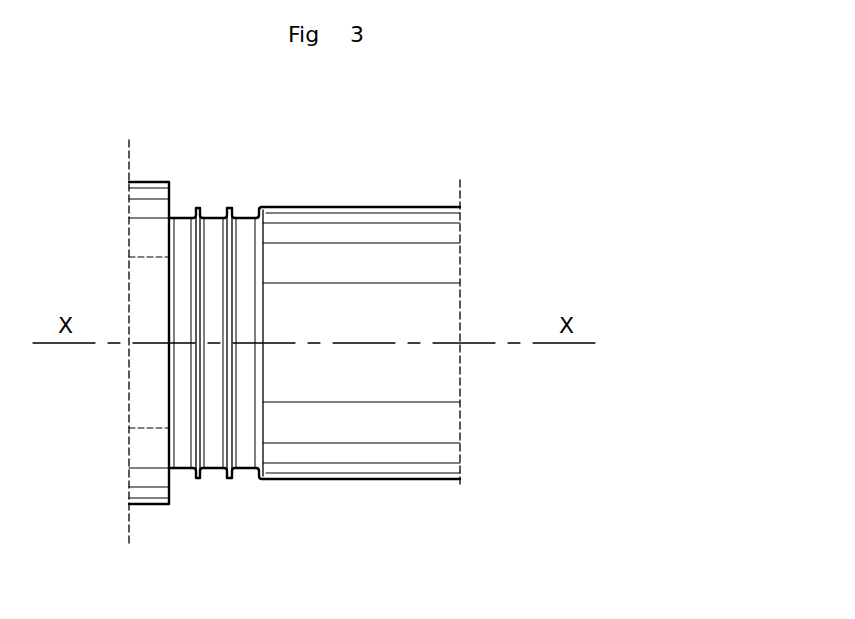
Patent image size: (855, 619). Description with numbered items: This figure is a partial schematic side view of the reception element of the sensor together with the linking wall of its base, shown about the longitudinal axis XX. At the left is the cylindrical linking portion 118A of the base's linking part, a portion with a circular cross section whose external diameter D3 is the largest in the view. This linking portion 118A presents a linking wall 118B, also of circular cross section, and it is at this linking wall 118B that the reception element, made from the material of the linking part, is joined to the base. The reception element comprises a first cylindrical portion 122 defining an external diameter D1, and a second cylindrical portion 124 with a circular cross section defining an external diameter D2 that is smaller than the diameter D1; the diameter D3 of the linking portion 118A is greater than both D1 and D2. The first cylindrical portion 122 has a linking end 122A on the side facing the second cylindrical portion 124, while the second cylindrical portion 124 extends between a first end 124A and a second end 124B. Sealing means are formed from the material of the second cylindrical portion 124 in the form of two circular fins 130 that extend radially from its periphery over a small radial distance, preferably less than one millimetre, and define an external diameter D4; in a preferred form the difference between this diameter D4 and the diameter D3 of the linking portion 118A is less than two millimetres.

The cylindrical linking portion 118A is at (138, 478).
The linking wall 118B is at (170, 494).
The first cylindrical portion 122 is at (407, 453).
The linking end 122A is at (262, 212).
The second cylindrical portion 124 is at (218, 470).
The first end 124A is at (180, 216).
The second end 124B is at (256, 472).
The circular fins 130 is at (223, 216).
The external diameter of the first cylindrical portion D1 is at (362, 207).
The external diameter of the second cylindrical portion D2 is at (246, 218).
The external diameter of the linking portion D3 is at (150, 182).
The external diameter of the circular fins D4 is at (198, 208).